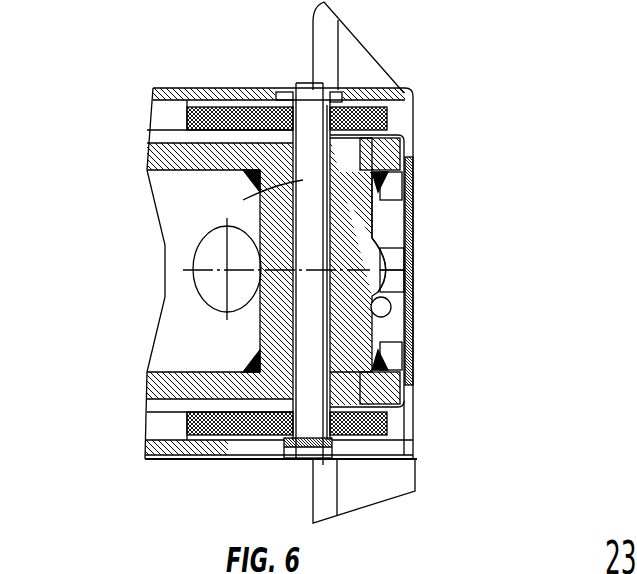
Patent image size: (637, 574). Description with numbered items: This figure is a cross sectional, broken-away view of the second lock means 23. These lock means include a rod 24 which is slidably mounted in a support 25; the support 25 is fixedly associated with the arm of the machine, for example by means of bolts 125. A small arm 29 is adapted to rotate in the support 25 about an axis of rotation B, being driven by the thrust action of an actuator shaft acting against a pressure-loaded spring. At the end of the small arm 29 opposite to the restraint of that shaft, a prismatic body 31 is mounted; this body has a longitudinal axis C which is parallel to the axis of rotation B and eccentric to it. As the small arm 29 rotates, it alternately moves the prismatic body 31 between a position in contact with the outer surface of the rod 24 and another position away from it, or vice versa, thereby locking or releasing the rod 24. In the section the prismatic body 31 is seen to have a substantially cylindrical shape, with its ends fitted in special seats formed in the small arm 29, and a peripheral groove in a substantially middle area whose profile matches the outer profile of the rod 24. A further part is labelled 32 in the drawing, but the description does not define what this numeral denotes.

The second lock means 23 is at (458, 173).
The rod 24 is at (210, 287).
The support 25 is at (173, 200).
The small arm 29 is at (218, 150).
The prismatic body 31 is at (280, 405).
The sealing ring 32 is at (372, 312).
The bolts 125 is at (403, 347).
The axis of rotation B is at (333, 116).
The longitudinal axis C is at (262, 192).